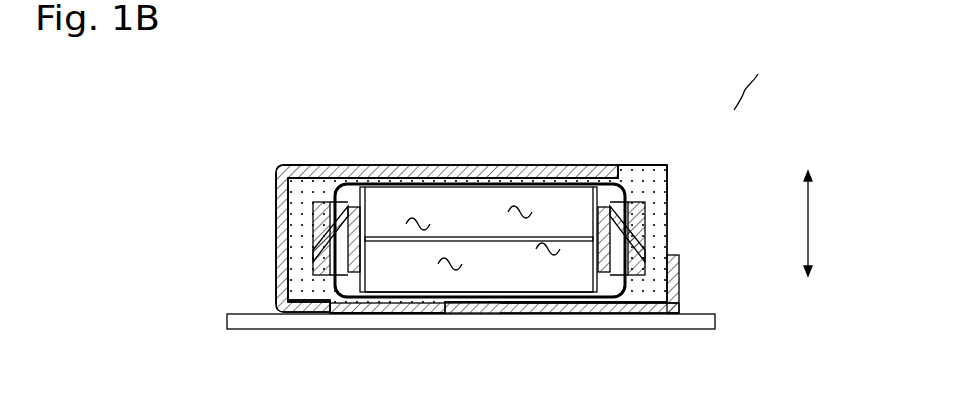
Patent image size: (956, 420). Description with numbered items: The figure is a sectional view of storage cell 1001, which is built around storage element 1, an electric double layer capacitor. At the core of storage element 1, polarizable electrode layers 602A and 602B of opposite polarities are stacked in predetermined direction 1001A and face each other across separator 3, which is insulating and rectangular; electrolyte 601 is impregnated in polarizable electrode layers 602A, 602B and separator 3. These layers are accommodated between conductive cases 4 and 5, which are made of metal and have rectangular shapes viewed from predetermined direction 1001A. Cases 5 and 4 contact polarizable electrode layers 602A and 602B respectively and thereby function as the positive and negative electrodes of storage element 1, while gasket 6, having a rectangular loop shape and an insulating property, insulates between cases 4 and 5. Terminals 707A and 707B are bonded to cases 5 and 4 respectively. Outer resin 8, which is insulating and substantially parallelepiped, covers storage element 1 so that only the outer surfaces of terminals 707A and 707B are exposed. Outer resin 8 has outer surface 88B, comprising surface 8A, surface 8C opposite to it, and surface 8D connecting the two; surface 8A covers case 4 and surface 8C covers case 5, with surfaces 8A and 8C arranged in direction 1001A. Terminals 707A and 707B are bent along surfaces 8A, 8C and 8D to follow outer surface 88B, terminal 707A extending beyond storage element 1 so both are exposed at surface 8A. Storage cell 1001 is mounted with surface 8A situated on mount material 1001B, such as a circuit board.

The storage element 1 is at (487, 296).
The separator 3 is at (481, 238).
The case 4 is at (378, 295).
The case 5 is at (601, 190).
The gasket 6 is at (650, 228).
The outer resin 8 is at (652, 183).
The surface 8A is at (435, 310).
The surface 8C is at (458, 172).
The surface 8D is at (280, 243).
The outer surface 88B is at (637, 165).
The electrolyte 601 is at (545, 245).
The polarizable electrode layer 602A is at (422, 202).
The polarizable electrode layer 602B is at (418, 275).
The terminal 707A is at (313, 167).
The terminal 707B is at (565, 312).
The storage cell 1001 is at (759, 80).
The predetermined direction 1001A is at (809, 238).
The mount material 1001B is at (714, 318).